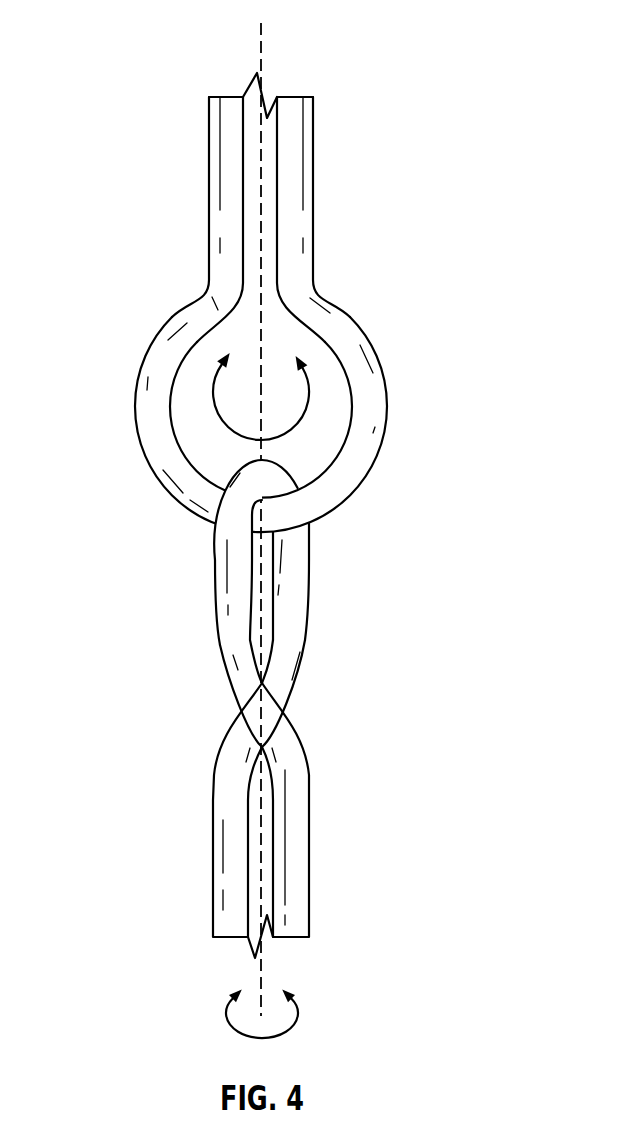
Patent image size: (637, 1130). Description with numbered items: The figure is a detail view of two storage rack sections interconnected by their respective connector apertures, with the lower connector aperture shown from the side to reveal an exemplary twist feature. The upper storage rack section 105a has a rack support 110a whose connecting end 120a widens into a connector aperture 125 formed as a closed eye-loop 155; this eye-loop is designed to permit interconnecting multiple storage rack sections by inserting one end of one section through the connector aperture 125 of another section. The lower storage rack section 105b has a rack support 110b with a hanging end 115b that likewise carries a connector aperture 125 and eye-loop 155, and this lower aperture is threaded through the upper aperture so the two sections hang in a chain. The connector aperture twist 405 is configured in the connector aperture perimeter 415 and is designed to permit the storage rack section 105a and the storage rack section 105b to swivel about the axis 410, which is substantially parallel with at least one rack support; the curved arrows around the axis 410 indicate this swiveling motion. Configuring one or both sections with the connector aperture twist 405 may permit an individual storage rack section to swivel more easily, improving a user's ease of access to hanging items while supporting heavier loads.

The axis 410 is at (260, 43).
The storage rack section 105a is at (379, 233).
The rack support 110a is at (313, 173).
The connecting end 120a is at (318, 285).
The connector aperture 125 is at (387, 400).
The eye-loop 155 is at (278, 398).
The connector aperture perimeter 415 is at (133, 412).
The connector aperture twist 405 is at (350, 598).
The storage rack section 105b is at (377, 908).
The rack support 110b is at (215, 857).
The hanging end 115b is at (310, 835).